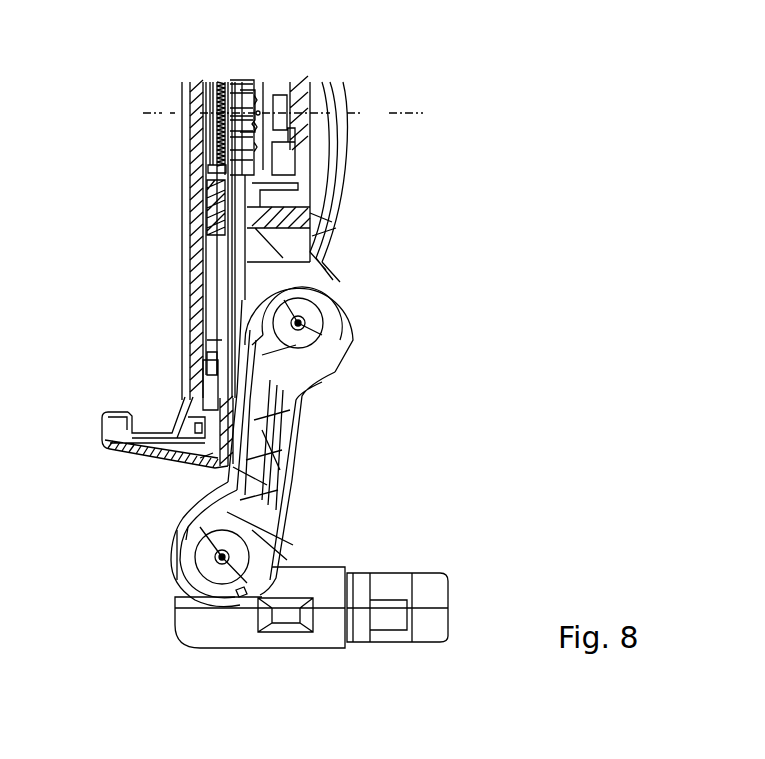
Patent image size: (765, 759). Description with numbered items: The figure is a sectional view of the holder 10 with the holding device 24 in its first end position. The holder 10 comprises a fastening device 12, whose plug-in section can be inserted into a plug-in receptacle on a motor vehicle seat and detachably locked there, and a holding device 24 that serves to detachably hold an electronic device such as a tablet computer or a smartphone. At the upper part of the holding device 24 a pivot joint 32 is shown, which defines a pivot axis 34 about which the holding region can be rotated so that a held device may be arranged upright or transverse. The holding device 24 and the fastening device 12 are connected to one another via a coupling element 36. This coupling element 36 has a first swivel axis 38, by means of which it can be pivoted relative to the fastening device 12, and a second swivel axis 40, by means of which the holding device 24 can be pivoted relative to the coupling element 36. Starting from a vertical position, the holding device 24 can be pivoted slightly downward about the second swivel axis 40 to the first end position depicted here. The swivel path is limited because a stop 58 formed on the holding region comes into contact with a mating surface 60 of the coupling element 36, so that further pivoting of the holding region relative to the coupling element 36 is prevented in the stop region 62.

The holder 10 is at (515, 178).
The fastening device 12 is at (160, 649).
The holding device 24 is at (150, 284).
The pivot joint 32 is at (358, 87).
The pivot axis 34 is at (407, 115).
The coupling element 36 is at (306, 422).
The first swivel axis 38 is at (200, 557).
The second swivel axis 40 is at (305, 323).
The stop 58 is at (232, 438).
The mating surface 60 is at (223, 477).
The stop region 62 is at (232, 444).